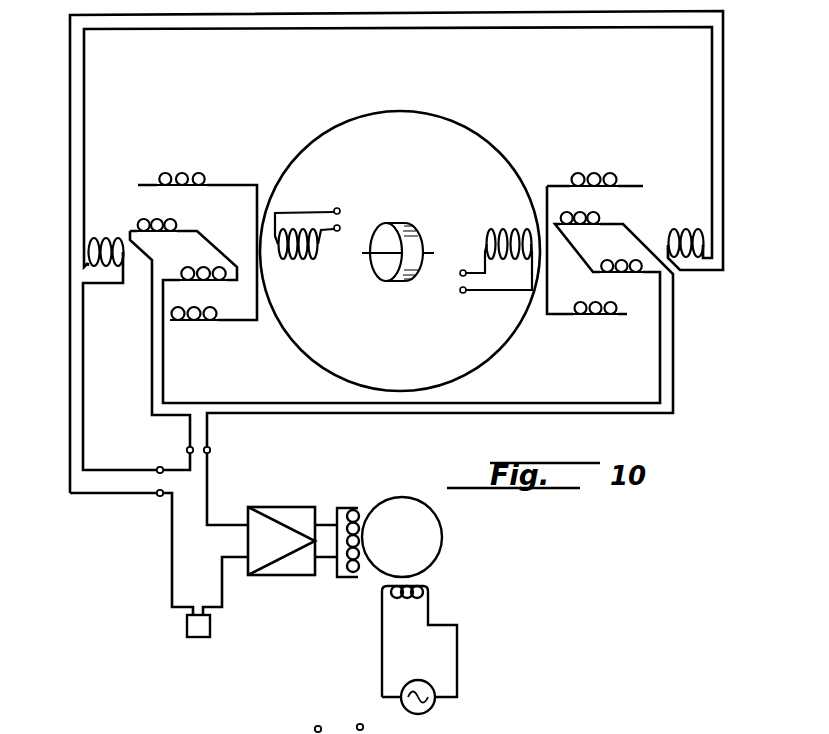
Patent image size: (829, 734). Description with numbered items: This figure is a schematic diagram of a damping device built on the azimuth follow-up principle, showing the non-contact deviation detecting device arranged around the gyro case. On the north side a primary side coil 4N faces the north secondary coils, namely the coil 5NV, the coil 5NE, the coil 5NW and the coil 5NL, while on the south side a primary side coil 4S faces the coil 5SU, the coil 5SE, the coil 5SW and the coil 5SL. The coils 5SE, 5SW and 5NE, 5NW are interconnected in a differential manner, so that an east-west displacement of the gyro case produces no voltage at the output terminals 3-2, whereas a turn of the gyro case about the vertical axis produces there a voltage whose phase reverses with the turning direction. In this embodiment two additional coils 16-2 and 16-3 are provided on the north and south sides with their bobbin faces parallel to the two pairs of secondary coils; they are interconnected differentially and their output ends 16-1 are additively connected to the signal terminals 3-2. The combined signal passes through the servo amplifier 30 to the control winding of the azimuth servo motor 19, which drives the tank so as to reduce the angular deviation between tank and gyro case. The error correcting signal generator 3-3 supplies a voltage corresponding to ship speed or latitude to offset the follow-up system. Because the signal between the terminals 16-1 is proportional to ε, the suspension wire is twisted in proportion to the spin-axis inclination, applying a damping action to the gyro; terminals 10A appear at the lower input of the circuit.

The primary side coil 4N is at (302, 262).
The primary side coil 4S is at (500, 228).
The secondary side coil 5NV is at (186, 176).
The secondary side coil 5NE is at (152, 224).
The secondary side coil 5NW is at (207, 284).
The secondary side coil 5NL is at (203, 326).
The secondary side coil 5SU is at (592, 176).
The secondary side coil 5SE is at (586, 215).
The secondary side coil 5SW is at (614, 264).
The secondary side coil 5SL is at (583, 320).
The output ends 16-1 is at (157, 495).
The coil 16-2 is at (107, 236).
The coil 16-3 is at (682, 228).
The output terminals 3-2 is at (193, 447).
The error correcting signal generator 3-3 is at (212, 628).
The servo amplifier 30 is at (290, 506).
The azimuth servo motor 19 is at (443, 553).
The input terminals 10A is at (361, 724).